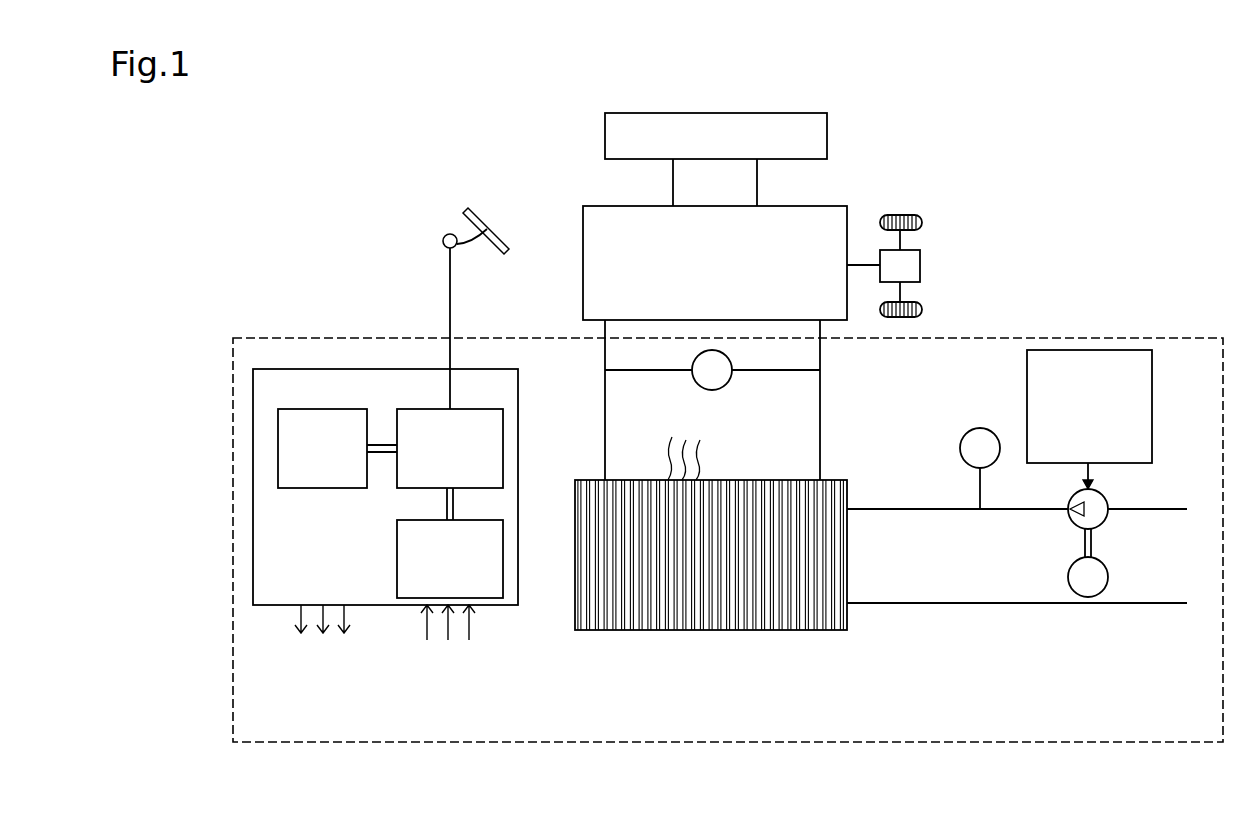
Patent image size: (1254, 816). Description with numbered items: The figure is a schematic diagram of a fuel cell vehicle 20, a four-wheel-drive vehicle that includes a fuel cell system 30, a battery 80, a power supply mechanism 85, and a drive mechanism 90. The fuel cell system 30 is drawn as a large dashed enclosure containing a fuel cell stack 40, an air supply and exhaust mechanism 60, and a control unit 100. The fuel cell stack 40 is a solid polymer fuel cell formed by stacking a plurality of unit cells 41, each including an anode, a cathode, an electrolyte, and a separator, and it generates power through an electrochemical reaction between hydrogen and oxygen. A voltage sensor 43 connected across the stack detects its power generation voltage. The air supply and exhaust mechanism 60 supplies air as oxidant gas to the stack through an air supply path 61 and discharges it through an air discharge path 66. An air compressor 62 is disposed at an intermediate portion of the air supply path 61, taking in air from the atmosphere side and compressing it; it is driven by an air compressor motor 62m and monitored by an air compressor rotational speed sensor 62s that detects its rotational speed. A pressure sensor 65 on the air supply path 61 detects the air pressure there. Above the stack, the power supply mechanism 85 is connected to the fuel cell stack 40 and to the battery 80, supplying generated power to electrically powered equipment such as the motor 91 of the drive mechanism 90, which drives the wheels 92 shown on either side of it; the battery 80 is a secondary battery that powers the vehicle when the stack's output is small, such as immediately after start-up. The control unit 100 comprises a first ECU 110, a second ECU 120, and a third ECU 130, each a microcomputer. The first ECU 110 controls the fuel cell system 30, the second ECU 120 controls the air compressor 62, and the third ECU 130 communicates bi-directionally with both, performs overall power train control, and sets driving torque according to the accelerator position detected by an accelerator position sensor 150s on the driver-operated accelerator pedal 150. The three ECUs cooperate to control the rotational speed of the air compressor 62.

The fuel cell vehicle 20 is at (1061, 231).
The fuel cell system 30 is at (1170, 338).
The fuel cell stack 40 is at (745, 469).
The unit cells 41 is at (689, 449).
The voltage sensor 43 is at (697, 384).
The air supply and exhaust mechanism 60 is at (923, 480).
The air supply path 61 is at (1152, 492).
The air compressor 62 is at (1104, 523).
The air compressor motor 62m is at (1108, 578).
The air compressor rotational speed sensor 62s is at (1092, 350).
The pressure sensor 65 is at (975, 428).
The air discharge path 66 is at (1068, 605).
The battery 80 is at (770, 113).
The power supply mechanism 85 is at (807, 206).
The drive mechanism 90 is at (947, 191).
The motor 91 is at (922, 266).
The wheels 92 is at (926, 222).
The control unit 100 is at (328, 369).
The first ECU 110 is at (295, 409).
The second ECU 120 is at (456, 517).
The third ECU 130 is at (432, 409).
The accelerator pedal 150 is at (491, 218).
The accelerator position sensor 150s is at (444, 236).